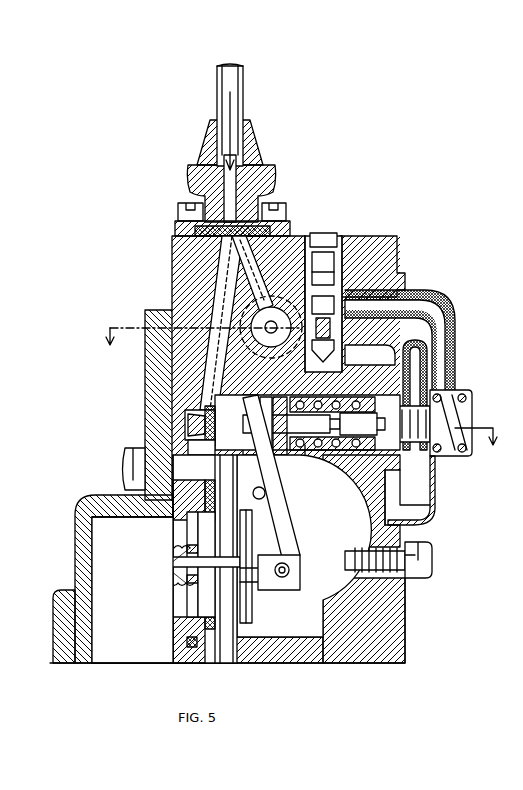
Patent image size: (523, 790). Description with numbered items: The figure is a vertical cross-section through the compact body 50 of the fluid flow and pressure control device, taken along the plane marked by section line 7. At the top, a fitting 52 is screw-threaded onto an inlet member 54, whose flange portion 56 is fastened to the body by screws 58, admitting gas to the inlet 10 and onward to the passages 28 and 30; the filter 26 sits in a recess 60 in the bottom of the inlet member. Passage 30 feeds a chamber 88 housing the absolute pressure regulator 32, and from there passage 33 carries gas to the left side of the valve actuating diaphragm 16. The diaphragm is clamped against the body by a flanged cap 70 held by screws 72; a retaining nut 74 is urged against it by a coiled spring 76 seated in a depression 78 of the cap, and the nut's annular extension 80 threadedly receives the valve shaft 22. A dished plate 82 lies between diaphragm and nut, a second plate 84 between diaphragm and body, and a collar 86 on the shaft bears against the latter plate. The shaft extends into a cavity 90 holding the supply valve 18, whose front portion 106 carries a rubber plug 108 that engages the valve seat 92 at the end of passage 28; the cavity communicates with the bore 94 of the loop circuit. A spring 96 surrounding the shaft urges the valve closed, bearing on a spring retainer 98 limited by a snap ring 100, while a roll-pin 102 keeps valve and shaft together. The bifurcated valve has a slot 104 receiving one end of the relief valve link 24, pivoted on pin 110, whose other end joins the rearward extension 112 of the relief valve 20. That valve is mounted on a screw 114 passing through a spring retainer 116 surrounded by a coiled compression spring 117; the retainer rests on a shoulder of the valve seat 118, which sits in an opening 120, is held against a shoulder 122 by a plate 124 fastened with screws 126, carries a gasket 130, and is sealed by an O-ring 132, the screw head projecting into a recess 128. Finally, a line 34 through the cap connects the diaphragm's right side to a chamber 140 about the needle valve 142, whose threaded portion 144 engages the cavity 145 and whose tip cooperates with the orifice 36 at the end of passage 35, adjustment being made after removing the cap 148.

The section line 7 is at (301, 396).
The inlet 10 is at (230, 143).
The valve actuating diaphragm 16 is at (412, 342).
The supply valve 18 is at (239, 475).
The relief valve 20 is at (252, 614).
The valve shaft 22 is at (307, 422).
The relief valve link 24 is at (270, 528).
The filter 26 is at (290, 226).
The passage 28 is at (218, 268).
The passage 30 is at (253, 274).
The absolute pressure regulator 32 is at (212, 298).
The passage 33 is at (400, 370).
The line 34 is at (447, 306).
The passage 35 is at (332, 413).
The seat or orifice 36 is at (271, 337).
The body 50 is at (405, 628).
The fitting 52 is at (262, 150).
The inlet member 54 is at (273, 178).
The flange portion 56 is at (178, 212).
The screws 58 is at (276, 204).
The recess 60 is at (195, 230).
The flanged cap 70 is at (436, 498).
The screws 72 is at (432, 568).
The retaining nut 74 is at (408, 448).
The coiled spring 76 is at (466, 392).
The depression 78 is at (455, 456).
The annular extension 80 is at (408, 405).
The dished plate 82 is at (395, 366).
The second plate 84 is at (364, 559).
The collar 86 is at (372, 497).
The chamber 88 is at (192, 345).
The cavity 90 is at (310, 461).
The valve seat 92 is at (188, 424).
The bore 94 is at (308, 550).
The spring 96 is at (304, 546).
The spring retainer 98 is at (362, 424).
The snap ring 100 is at (372, 396).
The roll-pin 102 is at (266, 455).
The slot 104 is at (252, 392).
The front portion 106 is at (212, 469).
The rubber plug 108 is at (214, 450).
The pin 110 is at (265, 492).
The rearward extension 112 is at (268, 580).
The screw 114 is at (138, 584).
The spring retainer 116 is at (198, 598).
The coiled compression spring 117 is at (160, 585).
The valve seat 118 is at (180, 636).
The opening 120 is at (208, 645).
The shoulder 122 is at (198, 660).
The plate 124 is at (76, 535).
The screws 126 is at (125, 470).
The recess 128 is at (100, 570).
The gasket 130 is at (215, 640).
The O-ring 132 is at (187, 520).
The chamber 140 is at (367, 281).
The needle valve 142 is at (372, 266).
The externally threaded portion 144 is at (343, 329).
The cavity 145 is at (310, 272).
The cap 148 is at (330, 233).